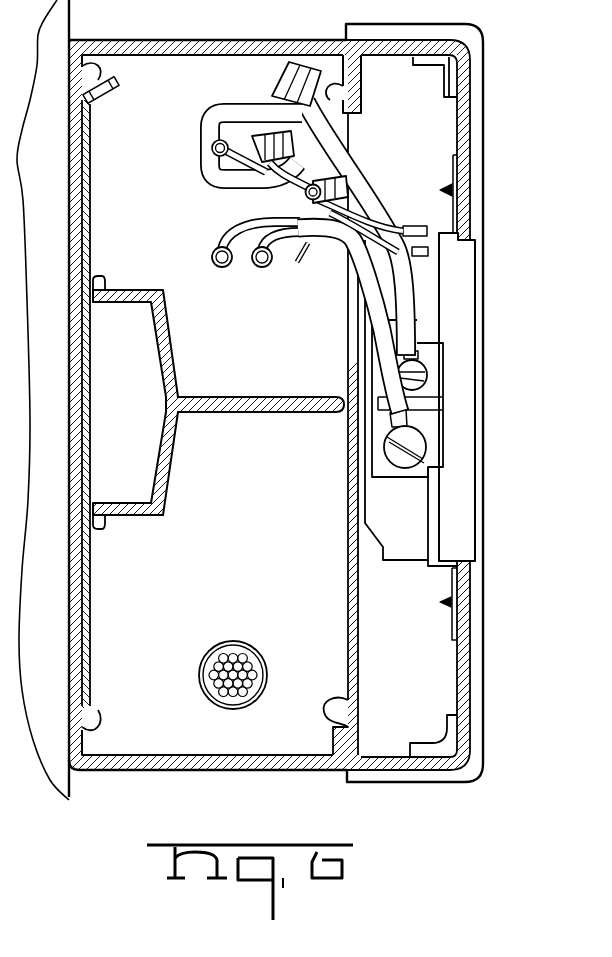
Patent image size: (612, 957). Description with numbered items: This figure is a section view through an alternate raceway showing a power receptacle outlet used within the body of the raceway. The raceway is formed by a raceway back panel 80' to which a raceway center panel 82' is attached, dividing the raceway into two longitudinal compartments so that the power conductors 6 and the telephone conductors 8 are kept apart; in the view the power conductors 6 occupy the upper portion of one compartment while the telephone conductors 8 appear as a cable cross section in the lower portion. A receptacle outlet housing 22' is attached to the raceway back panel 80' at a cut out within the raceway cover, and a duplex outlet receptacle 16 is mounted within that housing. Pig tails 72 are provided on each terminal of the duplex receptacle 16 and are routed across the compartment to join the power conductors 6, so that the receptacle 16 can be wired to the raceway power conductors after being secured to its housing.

The power conductors 6 is at (197, 137).
The pig tails 72 is at (363, 153).
The raceway back panel 80' is at (269, 398).
The raceway center panel 82' is at (218, 402).
The duplex outlet receptacle 16 is at (457, 325).
The receptacle outlet housing 22' is at (451, 403).
The telephone conductors 8 is at (197, 685).